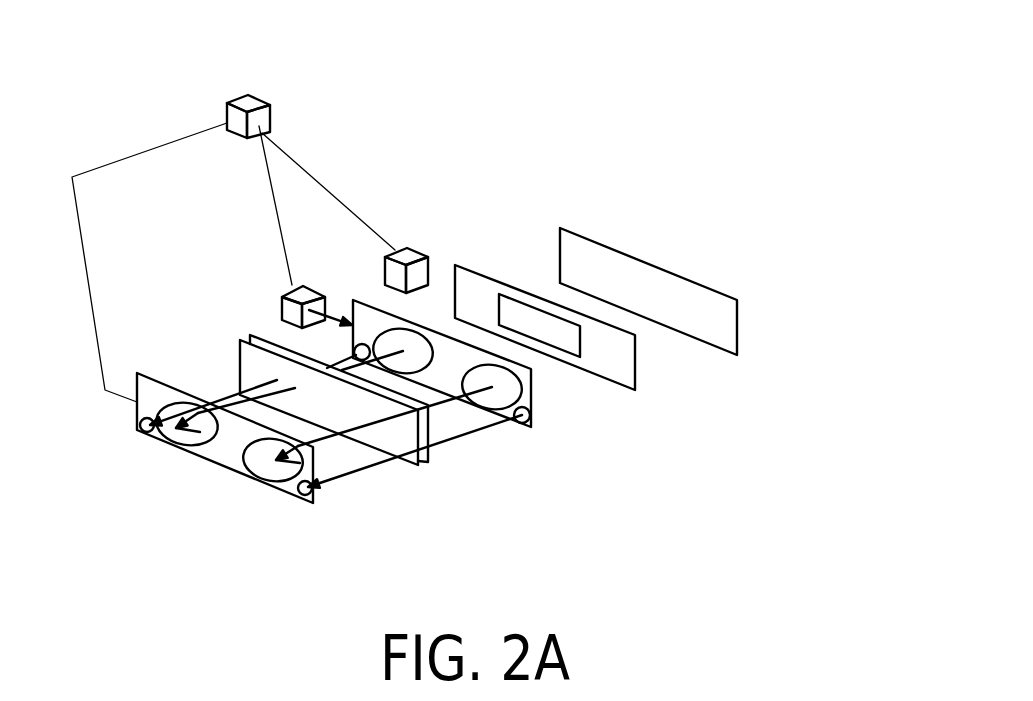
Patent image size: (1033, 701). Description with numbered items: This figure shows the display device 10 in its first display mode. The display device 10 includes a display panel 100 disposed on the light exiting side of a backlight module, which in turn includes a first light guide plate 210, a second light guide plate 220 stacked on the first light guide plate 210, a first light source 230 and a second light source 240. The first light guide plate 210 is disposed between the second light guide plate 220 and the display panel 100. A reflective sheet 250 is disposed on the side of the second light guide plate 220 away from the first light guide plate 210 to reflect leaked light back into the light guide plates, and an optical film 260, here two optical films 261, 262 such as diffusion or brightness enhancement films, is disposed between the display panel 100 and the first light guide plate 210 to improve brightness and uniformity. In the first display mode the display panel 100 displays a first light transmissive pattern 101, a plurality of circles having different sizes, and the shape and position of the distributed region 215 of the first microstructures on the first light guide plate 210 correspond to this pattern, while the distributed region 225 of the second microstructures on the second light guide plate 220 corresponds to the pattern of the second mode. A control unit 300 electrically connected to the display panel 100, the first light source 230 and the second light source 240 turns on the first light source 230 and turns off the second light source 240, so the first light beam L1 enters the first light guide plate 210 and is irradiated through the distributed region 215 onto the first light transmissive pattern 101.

The display device 10 is at (106, 44).
The display panel 100 is at (329, 477).
The first light transmissive pattern 101 is at (273, 470).
The first light guide plate 210 is at (477, 398).
The distributed region of the first microstructures 215 is at (488, 397).
The second light guide plate 220 is at (591, 356).
The distributed region of the second microstructures 225 is at (568, 342).
The first light source 230 is at (282, 307).
The second light source 240 is at (408, 257).
The reflective sheet 250 is at (728, 316).
The optical film 260 is at (426, 458).
The optical film 261 is at (397, 443).
The optical film 262 is at (425, 432).
The control unit 300 is at (250, 96).
The first light beam L1 is at (337, 316).